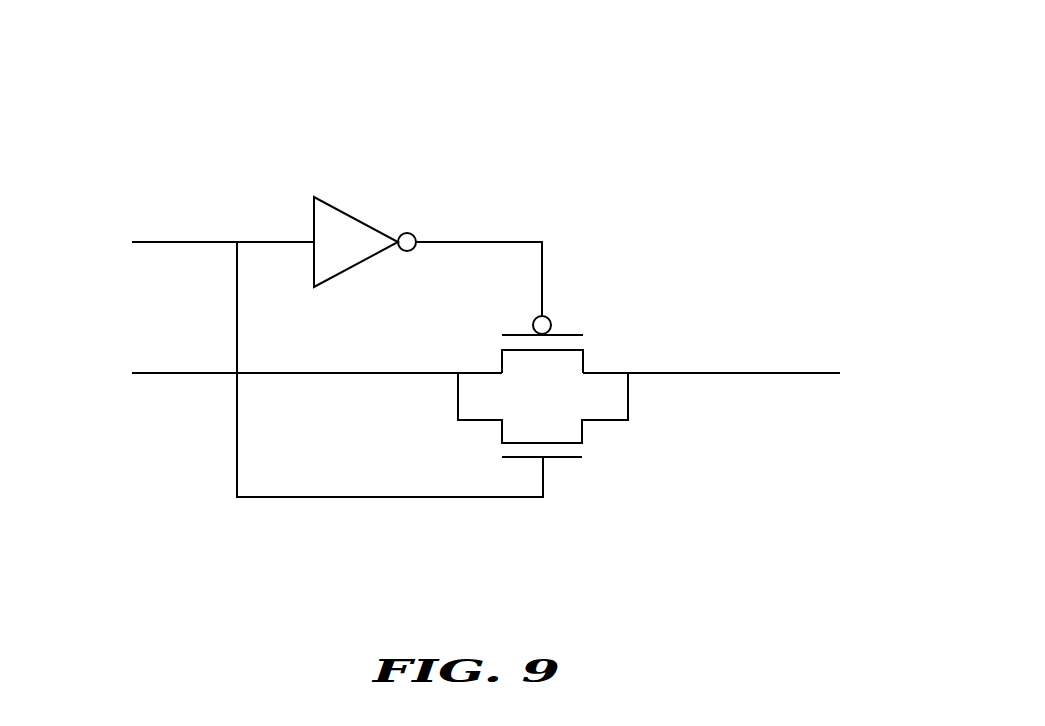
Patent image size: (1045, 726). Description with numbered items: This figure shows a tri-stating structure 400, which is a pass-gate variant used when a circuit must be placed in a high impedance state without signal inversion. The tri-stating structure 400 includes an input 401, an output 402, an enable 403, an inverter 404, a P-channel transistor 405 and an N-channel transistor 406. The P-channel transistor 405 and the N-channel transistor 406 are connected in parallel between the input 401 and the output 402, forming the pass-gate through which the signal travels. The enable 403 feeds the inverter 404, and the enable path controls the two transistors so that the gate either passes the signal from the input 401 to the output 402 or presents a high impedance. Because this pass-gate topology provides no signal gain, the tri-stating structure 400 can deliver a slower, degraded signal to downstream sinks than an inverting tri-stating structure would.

The tri-stating structure 400 is at (410, 112).
The input 401 is at (178, 371).
The output 402 is at (762, 371).
The enable 403 is at (180, 240).
The inverter 404 is at (368, 225).
The P-channel transistor 405 is at (572, 333).
The N-channel transistor 406 is at (568, 458).